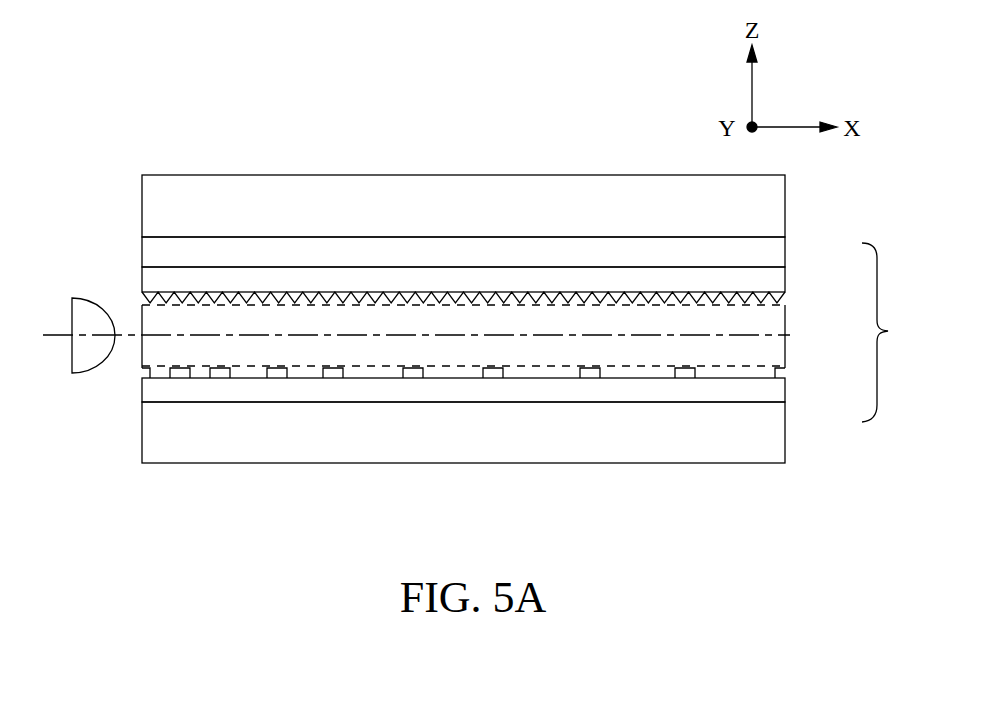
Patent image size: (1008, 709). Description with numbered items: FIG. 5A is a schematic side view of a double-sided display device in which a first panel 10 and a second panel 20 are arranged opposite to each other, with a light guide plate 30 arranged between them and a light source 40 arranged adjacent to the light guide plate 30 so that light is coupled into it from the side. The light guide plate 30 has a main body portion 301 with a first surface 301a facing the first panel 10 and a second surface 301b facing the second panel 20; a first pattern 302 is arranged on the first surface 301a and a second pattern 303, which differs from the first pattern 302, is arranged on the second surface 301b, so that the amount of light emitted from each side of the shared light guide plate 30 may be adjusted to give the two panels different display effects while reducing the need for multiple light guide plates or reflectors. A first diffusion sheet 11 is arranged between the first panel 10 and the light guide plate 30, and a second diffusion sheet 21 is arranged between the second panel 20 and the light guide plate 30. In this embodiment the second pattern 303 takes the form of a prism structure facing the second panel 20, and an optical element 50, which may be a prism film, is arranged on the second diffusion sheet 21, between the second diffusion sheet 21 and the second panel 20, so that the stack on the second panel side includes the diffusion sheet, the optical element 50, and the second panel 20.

The second panel 20 is at (150, 203).
The optical element 50 is at (150, 251).
The second diffusion sheet 21 is at (150, 278).
The second pattern 303 is at (752, 293).
The second surface 301b is at (785, 304).
The main body portion 301 is at (778, 325).
The first surface 301a is at (785, 370).
The first pattern 302 is at (742, 374).
The light guide plate 30 is at (892, 332).
The first diffusion sheet 11 is at (153, 393).
The first panel 10 is at (153, 443).
The light source 40 is at (78, 322).